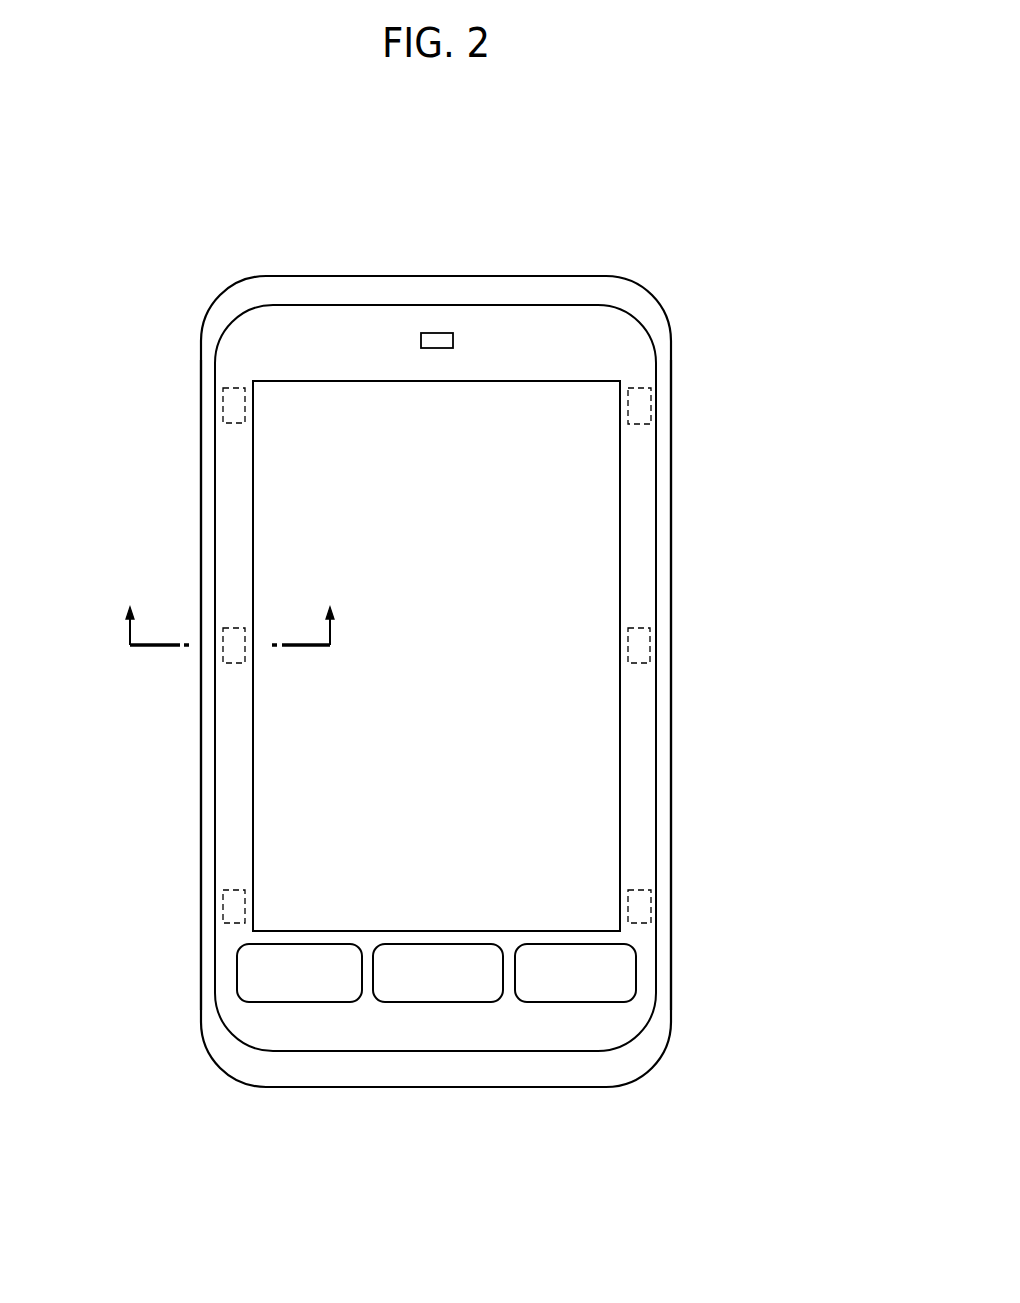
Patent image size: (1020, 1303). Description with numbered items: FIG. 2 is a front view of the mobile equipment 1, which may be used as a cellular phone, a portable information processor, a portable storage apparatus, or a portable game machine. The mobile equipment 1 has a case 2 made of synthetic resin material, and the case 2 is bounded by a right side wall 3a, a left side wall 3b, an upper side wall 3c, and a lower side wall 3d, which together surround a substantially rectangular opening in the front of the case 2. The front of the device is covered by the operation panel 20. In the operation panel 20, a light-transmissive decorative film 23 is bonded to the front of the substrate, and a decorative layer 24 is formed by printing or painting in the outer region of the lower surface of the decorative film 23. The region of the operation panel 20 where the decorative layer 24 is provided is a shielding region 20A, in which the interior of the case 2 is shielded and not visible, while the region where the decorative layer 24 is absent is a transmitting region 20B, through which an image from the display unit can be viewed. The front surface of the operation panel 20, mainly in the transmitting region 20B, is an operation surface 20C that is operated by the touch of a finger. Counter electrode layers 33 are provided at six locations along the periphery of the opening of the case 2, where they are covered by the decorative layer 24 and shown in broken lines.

The mobile equipment 1 is at (430, 681).
The case 2 is at (538, 276).
The right side wall 3a is at (672, 727).
The left side wall 3b is at (200, 817).
The upper side wall 3c is at (453, 276).
The lower side wall 3d is at (458, 1087).
The operation panel 20 is at (333, 322).
The shielding region 20A is at (604, 355).
The transmitting region 20B is at (600, 556).
The operation surface 20C is at (278, 556).
The decorative film 23 is at (645, 826).
The decorative layer 24 is at (273, 1033).
The counter electrode layer 33 is at (228, 410).